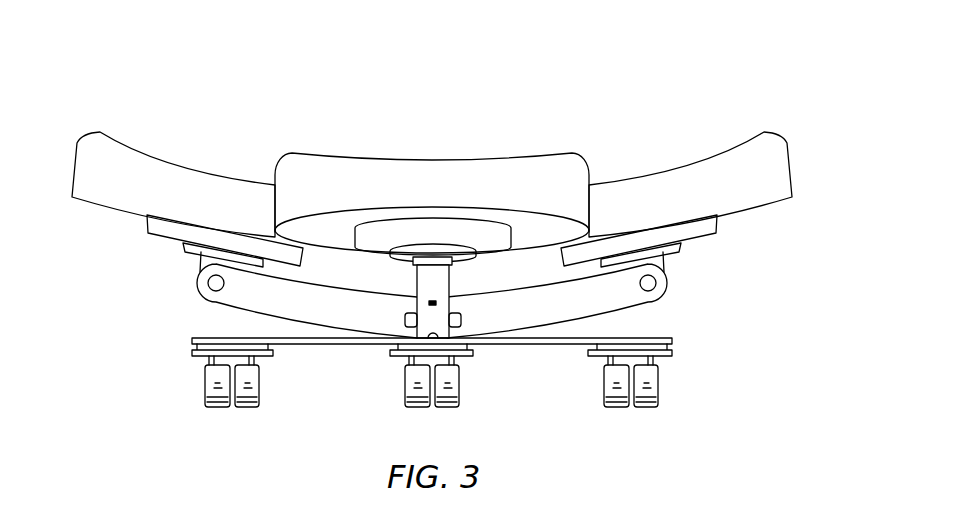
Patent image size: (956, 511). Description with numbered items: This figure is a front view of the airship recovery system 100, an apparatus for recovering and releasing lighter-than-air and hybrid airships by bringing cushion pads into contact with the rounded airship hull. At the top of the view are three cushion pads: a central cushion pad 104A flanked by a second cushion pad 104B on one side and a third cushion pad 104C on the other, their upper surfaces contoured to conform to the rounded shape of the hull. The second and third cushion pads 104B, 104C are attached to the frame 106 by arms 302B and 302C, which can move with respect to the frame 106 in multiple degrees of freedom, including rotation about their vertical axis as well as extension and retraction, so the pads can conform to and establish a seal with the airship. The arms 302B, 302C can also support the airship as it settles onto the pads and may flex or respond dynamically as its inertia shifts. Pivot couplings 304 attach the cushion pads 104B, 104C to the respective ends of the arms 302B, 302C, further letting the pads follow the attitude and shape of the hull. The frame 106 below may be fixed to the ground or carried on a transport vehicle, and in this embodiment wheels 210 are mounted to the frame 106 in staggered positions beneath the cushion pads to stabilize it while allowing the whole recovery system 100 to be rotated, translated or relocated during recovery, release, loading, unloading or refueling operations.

The recovery system 100 is at (242, 70).
The cushion pad 104A is at (432, 158).
The second cushion pad 104B is at (82, 152).
The third cushion pad 104C is at (788, 163).
The arm 302B is at (250, 307).
The arm 302C is at (605, 303).
The pivot coupling 304 is at (208, 283).
The frame 106 is at (328, 344).
The wheels 210 is at (248, 405).